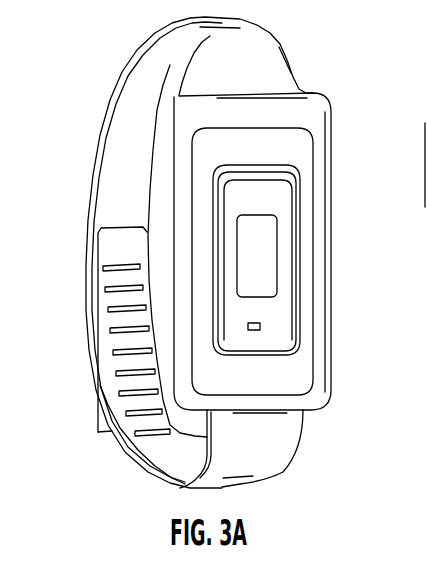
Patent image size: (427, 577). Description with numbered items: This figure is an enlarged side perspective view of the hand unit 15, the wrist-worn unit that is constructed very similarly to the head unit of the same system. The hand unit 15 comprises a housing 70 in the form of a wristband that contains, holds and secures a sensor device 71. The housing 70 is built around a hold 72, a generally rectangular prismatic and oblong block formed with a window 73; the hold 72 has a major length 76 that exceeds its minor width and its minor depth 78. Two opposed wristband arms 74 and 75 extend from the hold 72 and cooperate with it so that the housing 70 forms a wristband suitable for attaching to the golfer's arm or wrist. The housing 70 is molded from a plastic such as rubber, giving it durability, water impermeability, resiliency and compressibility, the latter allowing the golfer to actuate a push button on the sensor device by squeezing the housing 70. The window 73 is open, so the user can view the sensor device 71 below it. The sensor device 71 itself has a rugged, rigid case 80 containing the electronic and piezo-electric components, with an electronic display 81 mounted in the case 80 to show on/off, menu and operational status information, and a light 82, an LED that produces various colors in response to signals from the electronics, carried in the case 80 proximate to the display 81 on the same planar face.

The hand unit 15 is at (182, 138).
The housing 70 is at (277, 447).
The sensor device 71 is at (287, 173).
The hold 72 is at (336, 294).
The window 73 is at (283, 222).
The wristband arm 74 is at (273, 42).
The wristband arm 75 is at (153, 477).
The major length 76 is at (423, 273).
The minor depth 78 is at (195, 67).
The case 80 is at (293, 340).
The electronic display 81 is at (277, 258).
The light 82 is at (258, 330).